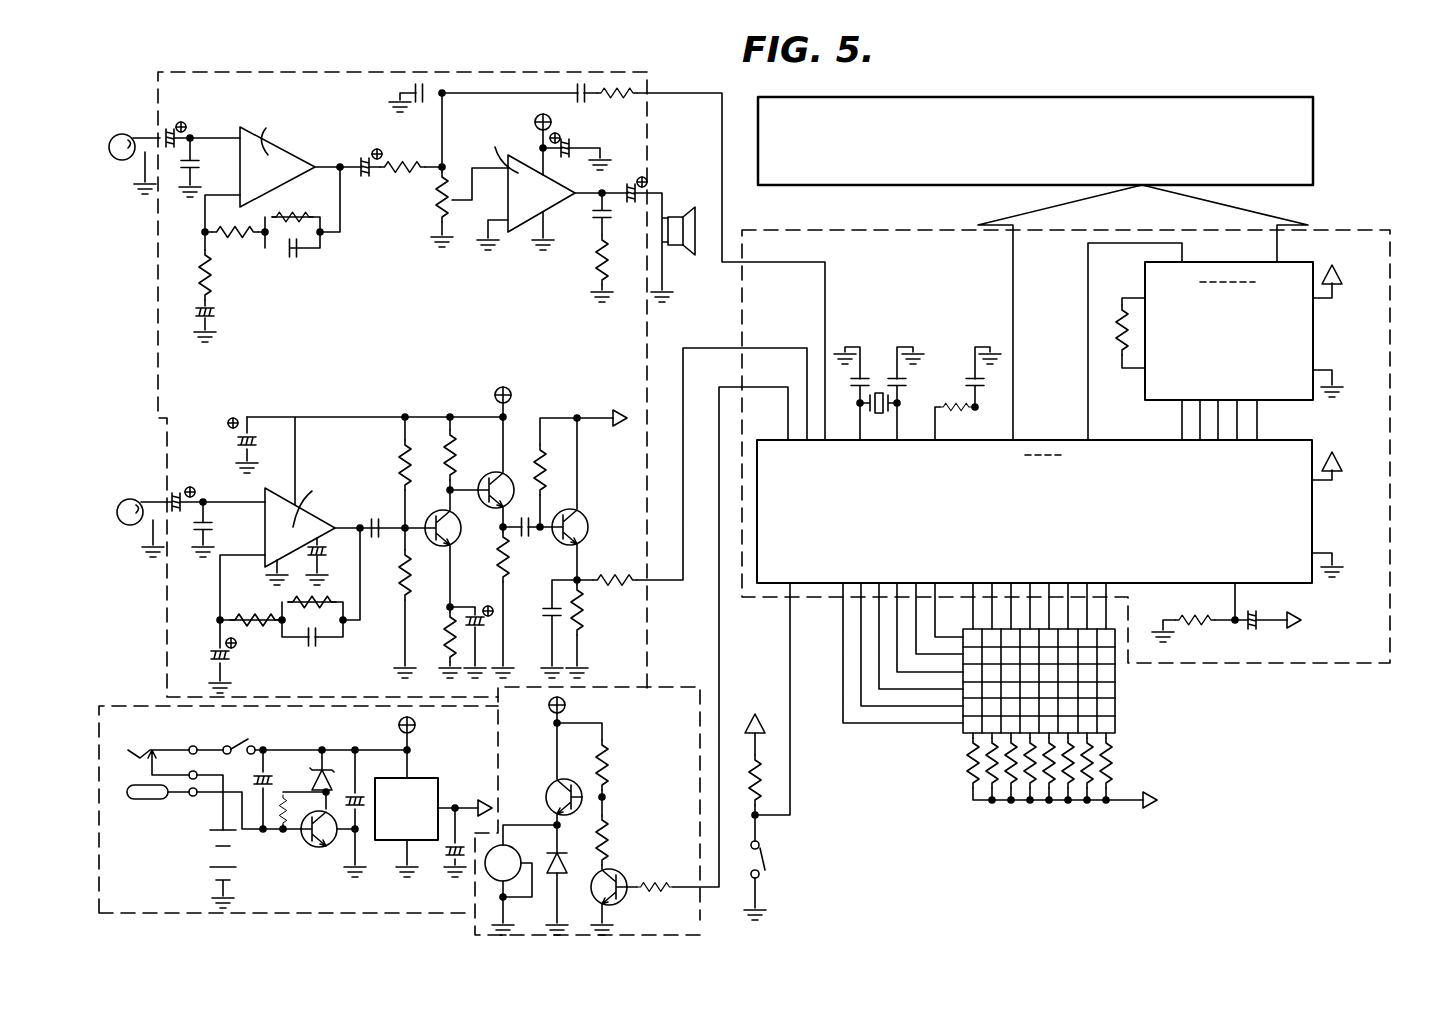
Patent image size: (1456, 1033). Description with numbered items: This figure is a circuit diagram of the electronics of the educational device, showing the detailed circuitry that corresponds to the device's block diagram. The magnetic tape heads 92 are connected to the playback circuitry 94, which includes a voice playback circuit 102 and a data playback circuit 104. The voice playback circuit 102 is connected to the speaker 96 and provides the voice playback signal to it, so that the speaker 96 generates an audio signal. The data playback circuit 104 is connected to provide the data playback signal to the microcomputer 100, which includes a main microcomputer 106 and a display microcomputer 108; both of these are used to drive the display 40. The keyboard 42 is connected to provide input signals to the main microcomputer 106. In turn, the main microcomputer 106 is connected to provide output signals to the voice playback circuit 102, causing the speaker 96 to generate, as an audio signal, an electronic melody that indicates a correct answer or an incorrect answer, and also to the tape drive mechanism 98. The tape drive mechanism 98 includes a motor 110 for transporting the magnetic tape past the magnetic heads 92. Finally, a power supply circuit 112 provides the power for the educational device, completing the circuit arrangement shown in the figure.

The display 40 is at (1190, 97).
The keyboard 42 is at (1146, 720).
The magnetic tape heads 92 is at (120, 134).
The playback circuitry 94 is at (467, 71).
The speaker 96 is at (691, 210).
The tape drive mechanism 98 is at (700, 924).
The microcomputer 100 is at (1393, 262).
The voice playback circuit 102 is at (455, 270).
The data playback circuit 104 is at (443, 396).
The main microcomputer 106 is at (1312, 520).
The display microcomputer 108 is at (1313, 338).
The motor 110 is at (506, 900).
The power supply circuit 112 is at (127, 706).